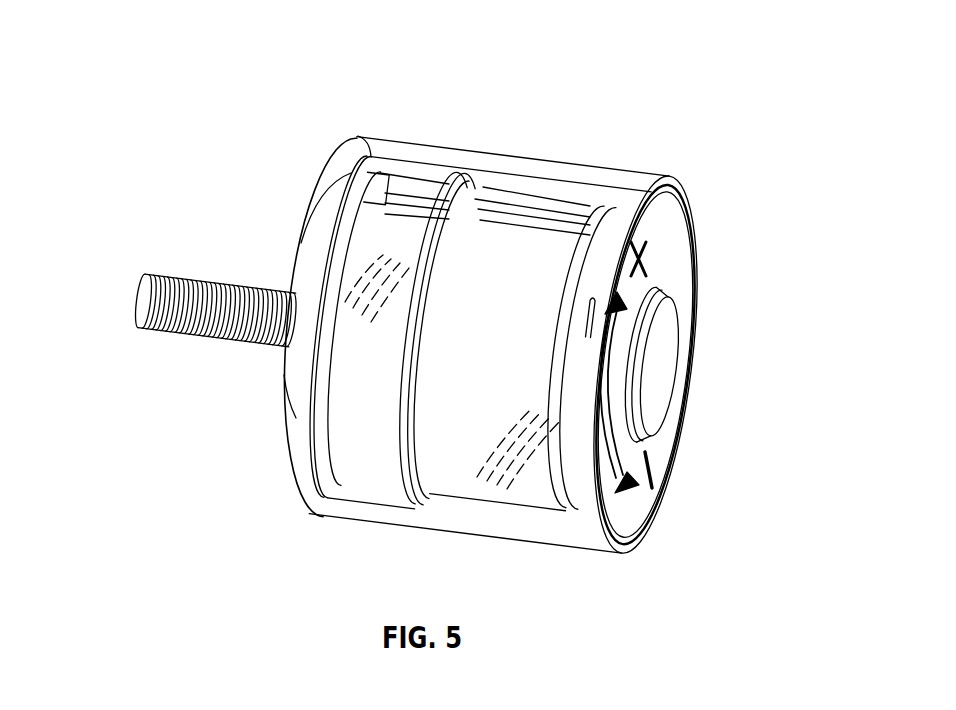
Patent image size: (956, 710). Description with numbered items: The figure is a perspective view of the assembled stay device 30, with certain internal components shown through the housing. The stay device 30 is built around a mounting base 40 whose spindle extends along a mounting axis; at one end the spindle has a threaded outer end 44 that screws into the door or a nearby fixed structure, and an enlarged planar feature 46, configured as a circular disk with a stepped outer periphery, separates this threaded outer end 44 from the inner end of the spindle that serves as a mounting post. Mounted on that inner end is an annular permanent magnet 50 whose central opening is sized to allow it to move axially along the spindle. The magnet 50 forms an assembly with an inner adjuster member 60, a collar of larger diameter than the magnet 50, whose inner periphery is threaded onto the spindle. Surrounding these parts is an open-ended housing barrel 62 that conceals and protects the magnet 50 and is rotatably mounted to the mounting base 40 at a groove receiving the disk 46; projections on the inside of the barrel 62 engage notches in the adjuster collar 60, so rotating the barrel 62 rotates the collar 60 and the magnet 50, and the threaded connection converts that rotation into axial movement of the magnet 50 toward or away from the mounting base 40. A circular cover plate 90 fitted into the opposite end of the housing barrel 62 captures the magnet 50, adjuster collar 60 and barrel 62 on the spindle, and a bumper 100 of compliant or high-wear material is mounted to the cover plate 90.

The stay device 30 is at (287, 78).
The mounting base 40 is at (274, 508).
The outer end 44 is at (197, 287).
The enlarged planar feature 46 is at (283, 428).
The permanent magnet 50 is at (478, 492).
The inner adjuster member 60 is at (363, 488).
The housing barrel 62 is at (459, 145).
The cover plate 90 is at (674, 247).
The bumper 100 is at (662, 366).